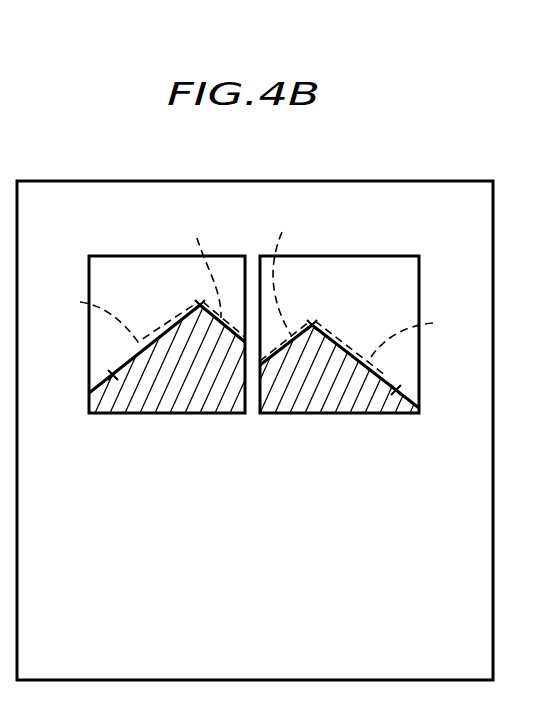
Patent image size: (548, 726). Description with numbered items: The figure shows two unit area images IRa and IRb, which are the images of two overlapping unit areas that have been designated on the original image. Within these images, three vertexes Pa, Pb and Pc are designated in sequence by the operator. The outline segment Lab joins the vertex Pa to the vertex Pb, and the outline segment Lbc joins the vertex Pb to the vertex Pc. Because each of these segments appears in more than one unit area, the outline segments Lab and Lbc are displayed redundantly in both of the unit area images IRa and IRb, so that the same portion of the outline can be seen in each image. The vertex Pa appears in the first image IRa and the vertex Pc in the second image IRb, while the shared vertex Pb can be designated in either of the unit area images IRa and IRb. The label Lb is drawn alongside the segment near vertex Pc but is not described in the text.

The unit area image IRa is at (135, 258).
The unit area image IRb is at (355, 263).
The outline segment Lab is at (167, 279).
The outline segment Lbc is at (201, 270).
The line segment through point Pb Lb is at (393, 337).
The vertex Pa is at (111, 374).
The vertex Pb is at (198, 304).
The vertex Pc is at (398, 389).